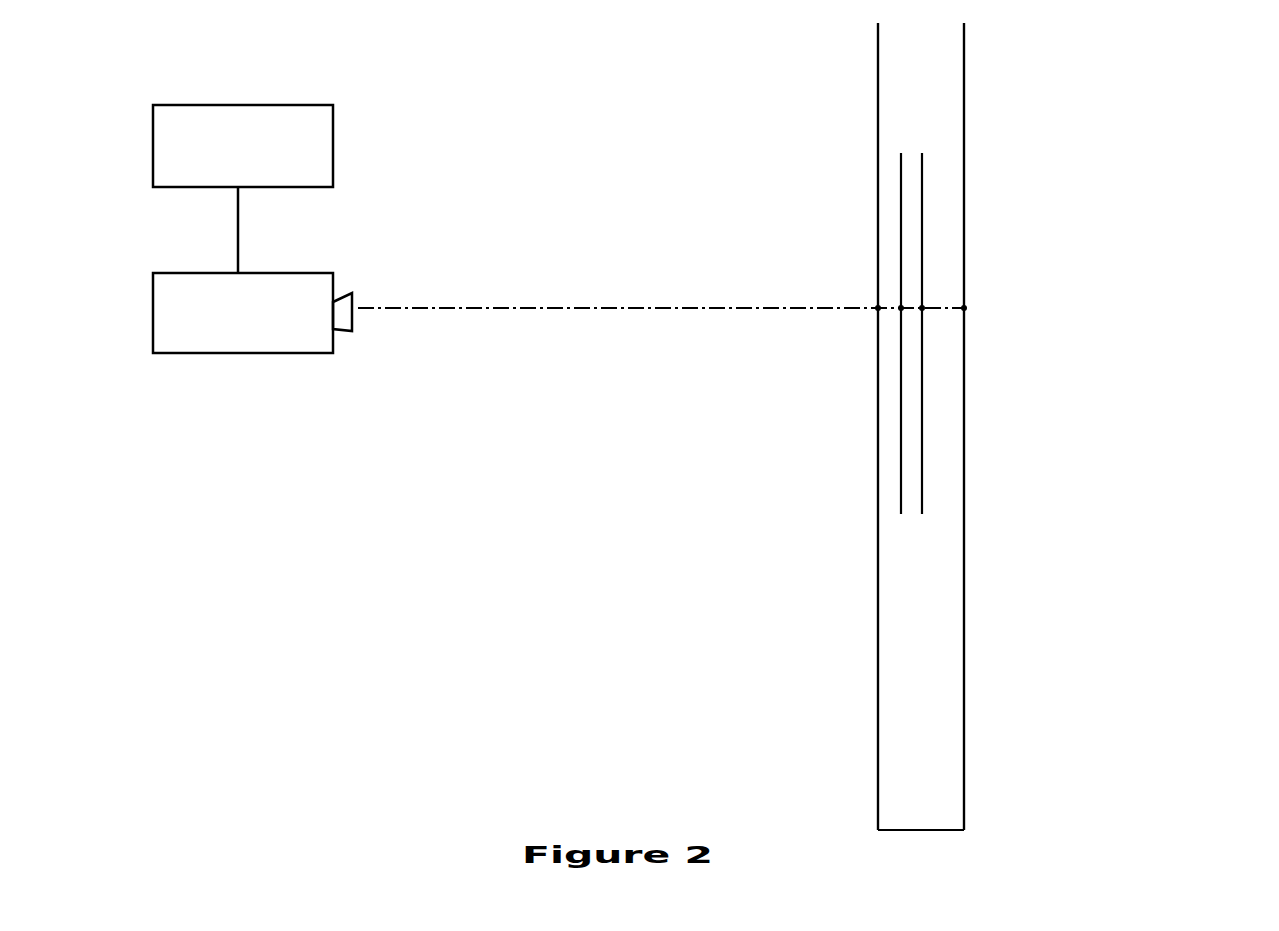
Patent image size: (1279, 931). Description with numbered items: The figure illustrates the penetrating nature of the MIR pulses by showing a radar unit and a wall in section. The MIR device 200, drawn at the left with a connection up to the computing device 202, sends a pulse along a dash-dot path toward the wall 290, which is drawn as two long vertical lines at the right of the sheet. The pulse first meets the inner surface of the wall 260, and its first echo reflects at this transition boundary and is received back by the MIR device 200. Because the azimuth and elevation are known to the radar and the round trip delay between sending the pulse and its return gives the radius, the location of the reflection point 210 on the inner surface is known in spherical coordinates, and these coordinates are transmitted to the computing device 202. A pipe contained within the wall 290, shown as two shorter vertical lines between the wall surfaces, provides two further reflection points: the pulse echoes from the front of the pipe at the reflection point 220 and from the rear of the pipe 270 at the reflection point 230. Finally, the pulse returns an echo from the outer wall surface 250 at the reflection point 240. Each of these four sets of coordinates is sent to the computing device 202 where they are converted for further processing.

The MIR device 200 is at (252, 400).
The computing device 202 is at (345, 122).
The reflection point 210 is at (736, 351).
The reflection point 220 is at (762, 273).
The reflection point 230 is at (1064, 280).
The reflection point 240 is at (1100, 351).
The outer wall surface 250 is at (1110, 426).
The inner surface of the wall 260 is at (742, 426).
The rear of the pipe 270 is at (1062, 333).
The wall 290 is at (1008, 426).